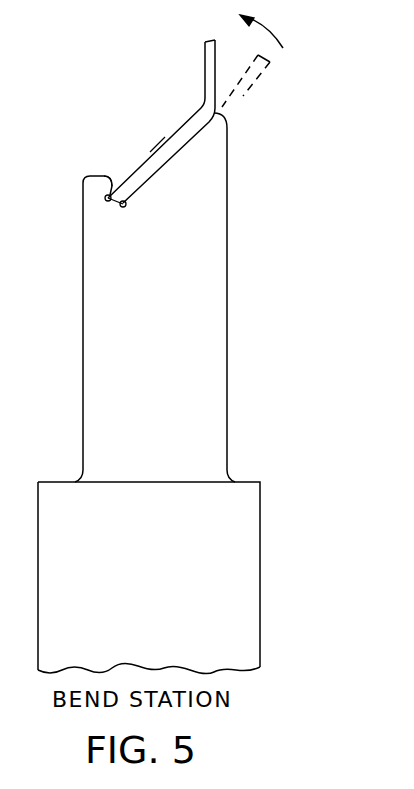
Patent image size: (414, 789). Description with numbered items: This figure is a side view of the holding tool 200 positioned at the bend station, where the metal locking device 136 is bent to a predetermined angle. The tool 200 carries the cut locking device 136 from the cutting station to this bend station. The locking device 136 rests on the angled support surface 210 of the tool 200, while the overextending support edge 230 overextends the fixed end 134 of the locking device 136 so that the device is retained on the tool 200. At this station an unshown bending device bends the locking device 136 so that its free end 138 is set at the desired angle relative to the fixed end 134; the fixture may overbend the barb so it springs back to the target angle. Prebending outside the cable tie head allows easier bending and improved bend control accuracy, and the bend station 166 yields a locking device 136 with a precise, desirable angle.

The bend station 166 is at (134, 339).
The tool 200 is at (217, 284).
The fixed end 134 is at (208, 53).
The metal locking device 136 is at (182, 135).
The free end 138 is at (143, 170).
The angled support surface 210 is at (162, 150).
The overextending support edge 230 is at (112, 182).